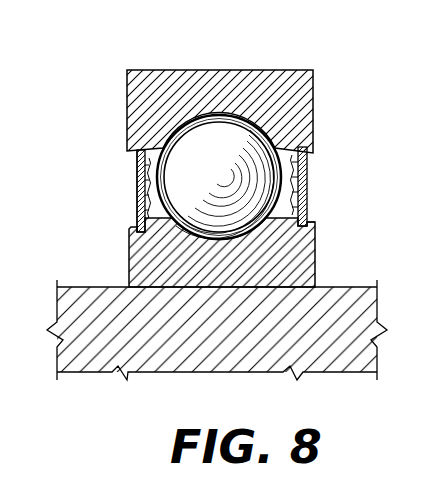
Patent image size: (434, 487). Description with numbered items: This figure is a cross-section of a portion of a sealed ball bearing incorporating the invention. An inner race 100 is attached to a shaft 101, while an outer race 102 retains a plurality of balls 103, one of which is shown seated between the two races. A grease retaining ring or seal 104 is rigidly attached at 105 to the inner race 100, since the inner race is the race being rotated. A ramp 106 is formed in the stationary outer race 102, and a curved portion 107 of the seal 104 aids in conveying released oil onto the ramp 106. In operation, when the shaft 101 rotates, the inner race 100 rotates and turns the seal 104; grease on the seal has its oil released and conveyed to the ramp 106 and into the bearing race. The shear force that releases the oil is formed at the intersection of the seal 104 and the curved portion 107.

The inner race 100 is at (316, 263).
The shaft 101 is at (112, 287).
The outer race 102 is at (232, 70).
The balls 103 is at (222, 130).
The grease retaining ring or seal 104 is at (138, 190).
The attachment point 105 is at (311, 226).
The ramp 106 is at (158, 148).
The curved portion 107 is at (138, 166).